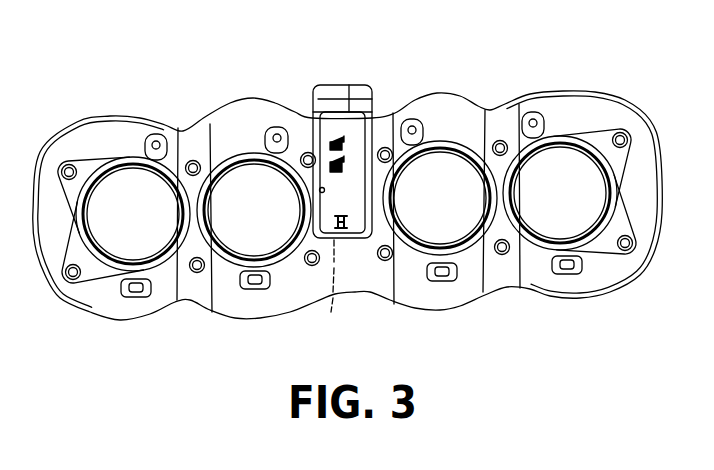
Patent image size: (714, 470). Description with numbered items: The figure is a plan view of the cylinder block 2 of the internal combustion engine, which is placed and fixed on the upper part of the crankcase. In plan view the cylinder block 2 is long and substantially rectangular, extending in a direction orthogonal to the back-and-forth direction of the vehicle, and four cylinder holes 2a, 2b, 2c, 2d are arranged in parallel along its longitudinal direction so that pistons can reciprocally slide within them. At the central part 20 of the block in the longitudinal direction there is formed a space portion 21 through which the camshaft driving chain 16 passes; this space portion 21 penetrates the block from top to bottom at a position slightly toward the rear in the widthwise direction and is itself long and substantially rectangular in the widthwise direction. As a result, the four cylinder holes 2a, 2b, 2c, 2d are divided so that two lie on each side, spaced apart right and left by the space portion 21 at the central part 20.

The cylinder block 2 is at (231, 78).
The cylinder hole 2a is at (133, 214).
The cylinder hole 2b is at (254, 210).
The cylinder hole 2c is at (440, 198).
The cylinder hole 2d is at (560, 193).
The camshaft driving chain 16 is at (329, 291).
The central part 20 is at (358, 68).
The space portion 21 is at (330, 122).